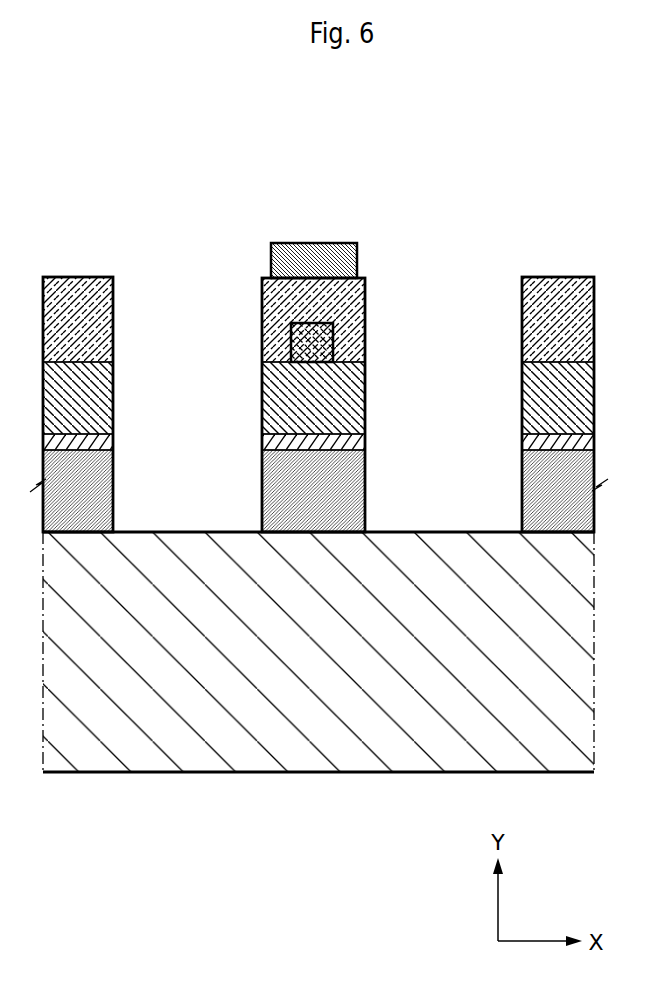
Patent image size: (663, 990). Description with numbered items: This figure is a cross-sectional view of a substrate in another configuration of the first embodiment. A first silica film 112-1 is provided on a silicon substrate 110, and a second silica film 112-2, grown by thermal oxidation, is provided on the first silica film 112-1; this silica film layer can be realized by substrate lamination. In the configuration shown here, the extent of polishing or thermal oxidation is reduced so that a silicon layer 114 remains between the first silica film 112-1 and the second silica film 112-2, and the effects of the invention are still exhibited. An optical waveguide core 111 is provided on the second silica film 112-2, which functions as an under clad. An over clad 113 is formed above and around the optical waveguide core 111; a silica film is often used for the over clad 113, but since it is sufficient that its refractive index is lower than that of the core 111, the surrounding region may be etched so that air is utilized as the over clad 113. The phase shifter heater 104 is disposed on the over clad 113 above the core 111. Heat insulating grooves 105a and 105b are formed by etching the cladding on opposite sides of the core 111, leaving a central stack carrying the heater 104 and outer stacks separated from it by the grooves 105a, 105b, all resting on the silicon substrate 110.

The phase shifter heater 104 is at (357, 255).
The over clad 113 is at (365, 318).
The optical waveguide core 111 is at (300, 340).
The heat insulating groove 105a is at (215, 419).
The heat insulating groove 105b is at (475, 371).
The second silica film 112-2 is at (365, 410).
The silicon layer 114 is at (365, 448).
The first silica film 112-1 is at (365, 500).
The silicon substrate 110 is at (307, 773).